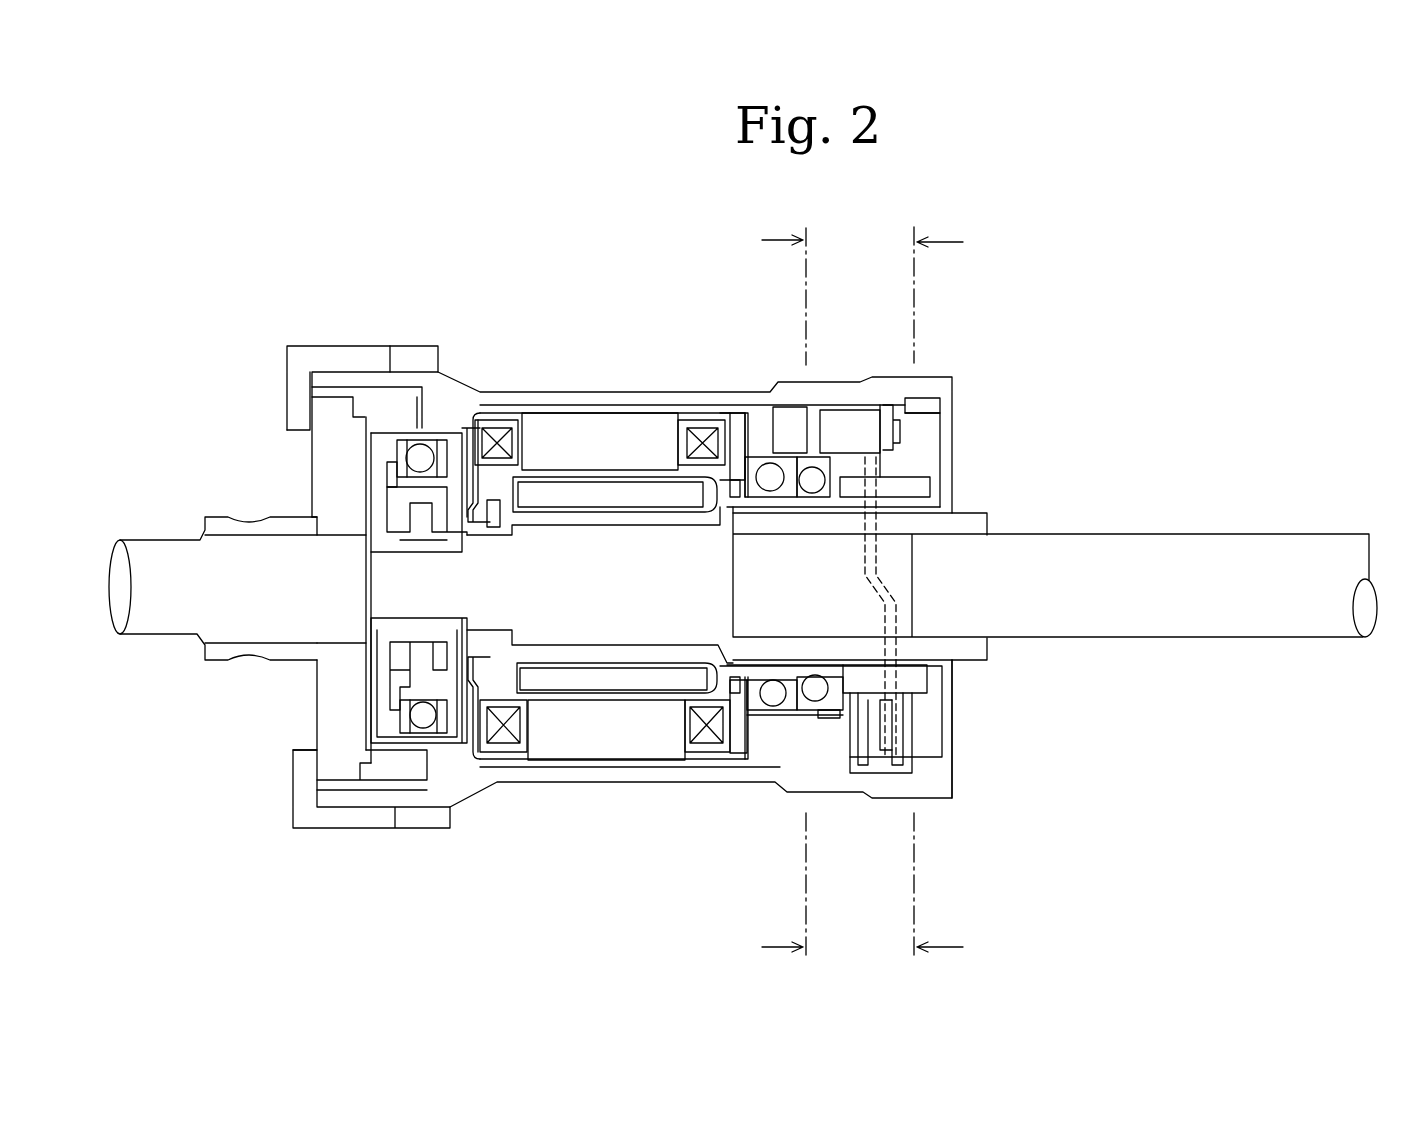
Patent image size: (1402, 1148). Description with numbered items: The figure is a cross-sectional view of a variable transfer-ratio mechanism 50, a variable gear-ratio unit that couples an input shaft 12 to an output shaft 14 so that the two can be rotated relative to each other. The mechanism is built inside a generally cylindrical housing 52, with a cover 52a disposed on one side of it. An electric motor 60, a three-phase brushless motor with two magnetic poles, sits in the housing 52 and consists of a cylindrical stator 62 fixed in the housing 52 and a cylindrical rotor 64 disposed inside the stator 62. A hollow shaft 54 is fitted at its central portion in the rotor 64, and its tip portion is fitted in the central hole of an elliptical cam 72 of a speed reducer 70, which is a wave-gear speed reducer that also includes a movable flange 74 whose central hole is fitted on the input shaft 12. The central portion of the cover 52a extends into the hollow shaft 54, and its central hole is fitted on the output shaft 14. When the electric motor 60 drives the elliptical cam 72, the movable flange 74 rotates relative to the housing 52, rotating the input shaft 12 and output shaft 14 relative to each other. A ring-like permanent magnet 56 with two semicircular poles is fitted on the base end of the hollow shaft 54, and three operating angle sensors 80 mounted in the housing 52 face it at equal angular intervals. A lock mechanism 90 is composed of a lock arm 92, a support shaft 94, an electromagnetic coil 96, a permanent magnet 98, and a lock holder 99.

The input shaft 12 is at (133, 548).
The output shaft 14 is at (1322, 547).
The variable transfer-ratio mechanism 50 is at (1145, 313).
The housing 52 is at (513, 777).
The cover 52a is at (952, 705).
The hollow shaft 54 is at (553, 515).
The permanent magnet 56 is at (783, 697).
The electric motor 60 is at (668, 265).
The stator 62 is at (597, 490).
The rotor 64 is at (633, 445).
The speed reducer 70 is at (437, 250).
The elliptical cam 72 is at (425, 487).
The movable flange 74 is at (325, 402).
The operating angle sensor 80 is at (830, 717).
The lock mechanism 90 is at (1052, 427).
The lock arm 92 is at (862, 583).
The support shaft 94 is at (875, 400).
The electromagnetic coil 96 is at (883, 757).
The permanent magnet 98 is at (865, 750).
The lock holder 99 is at (907, 478).